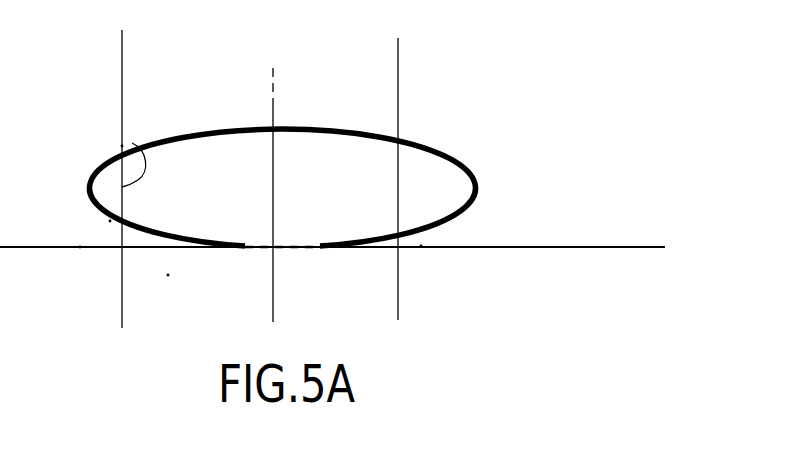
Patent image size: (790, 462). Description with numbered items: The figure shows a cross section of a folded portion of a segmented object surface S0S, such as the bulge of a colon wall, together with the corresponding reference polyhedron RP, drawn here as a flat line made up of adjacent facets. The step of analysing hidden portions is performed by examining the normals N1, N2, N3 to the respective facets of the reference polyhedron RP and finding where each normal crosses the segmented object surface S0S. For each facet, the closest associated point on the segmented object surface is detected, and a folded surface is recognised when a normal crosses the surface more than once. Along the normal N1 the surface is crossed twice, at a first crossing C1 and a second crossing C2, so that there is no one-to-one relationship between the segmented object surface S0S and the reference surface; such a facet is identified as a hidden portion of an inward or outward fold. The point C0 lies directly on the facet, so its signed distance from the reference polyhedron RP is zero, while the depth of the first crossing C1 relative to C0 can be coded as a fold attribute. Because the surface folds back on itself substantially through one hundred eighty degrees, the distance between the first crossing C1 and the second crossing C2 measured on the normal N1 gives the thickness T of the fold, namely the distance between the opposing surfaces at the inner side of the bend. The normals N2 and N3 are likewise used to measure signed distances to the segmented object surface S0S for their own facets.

The reference polyhedron RP is at (600, 247).
The segmented object surface S0S is at (448, 168).
The normal to facet Φ1 N1 is at (122, 164).
The normal to facet Φ2 N2 is at (273, 70).
The normal to facet Φ3 N3 is at (398, 163).
The thickness T is at (132, 143).
The point of the segmented object surface on facet Φ1 C0 is at (80, 247).
The first crossing C1 is at (110, 221).
The second crossing C2 is at (122, 147).